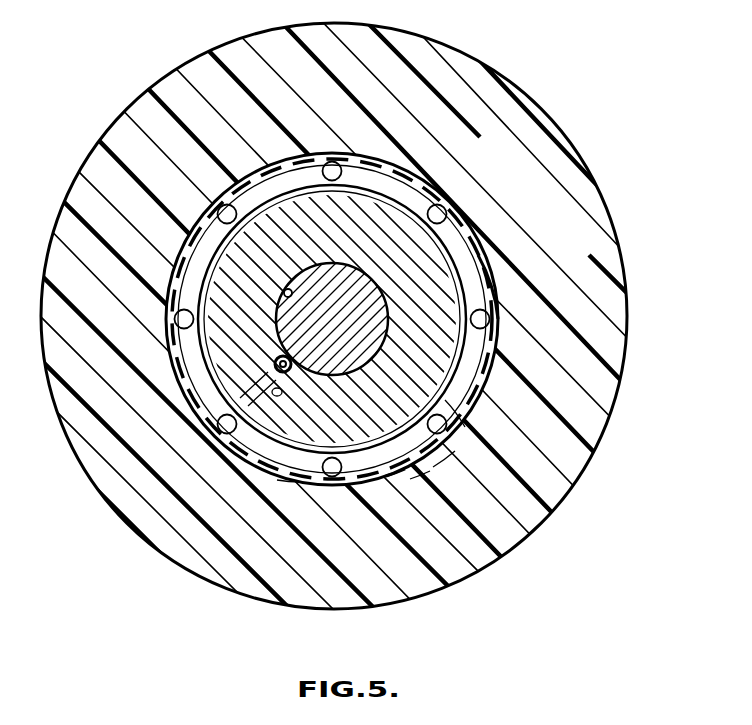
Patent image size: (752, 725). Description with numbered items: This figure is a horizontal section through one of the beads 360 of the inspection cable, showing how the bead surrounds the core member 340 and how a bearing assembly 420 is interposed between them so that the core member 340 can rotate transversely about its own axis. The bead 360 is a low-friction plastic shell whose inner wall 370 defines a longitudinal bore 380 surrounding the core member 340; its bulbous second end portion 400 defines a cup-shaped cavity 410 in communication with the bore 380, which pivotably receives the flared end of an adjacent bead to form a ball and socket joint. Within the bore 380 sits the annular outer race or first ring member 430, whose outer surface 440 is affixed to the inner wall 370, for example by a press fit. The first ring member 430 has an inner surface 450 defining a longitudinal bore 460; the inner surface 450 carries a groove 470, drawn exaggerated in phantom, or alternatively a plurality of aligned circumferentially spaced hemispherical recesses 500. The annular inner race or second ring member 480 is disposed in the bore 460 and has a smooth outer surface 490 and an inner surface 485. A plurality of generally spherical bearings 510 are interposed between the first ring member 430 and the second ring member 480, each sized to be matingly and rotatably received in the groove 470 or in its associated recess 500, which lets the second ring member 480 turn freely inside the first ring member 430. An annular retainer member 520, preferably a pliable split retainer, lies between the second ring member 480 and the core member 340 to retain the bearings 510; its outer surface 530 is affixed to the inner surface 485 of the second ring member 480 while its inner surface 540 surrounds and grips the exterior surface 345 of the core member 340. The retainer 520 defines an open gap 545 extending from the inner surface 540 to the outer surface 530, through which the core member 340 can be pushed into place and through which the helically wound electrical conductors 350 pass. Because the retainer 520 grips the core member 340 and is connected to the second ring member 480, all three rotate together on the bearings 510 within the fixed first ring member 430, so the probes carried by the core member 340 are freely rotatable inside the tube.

The core member 340 is at (325, 275).
The exterior surface 345 is at (367, 258).
The electrical conductors 350 is at (275, 372).
The bead 360 is at (519, 90).
The inner wall 370 is at (422, 184).
The longitudinal bore 380 is at (456, 211).
The second end portion 400 is at (625, 290).
The cavity 410 is at (493, 331).
The bearing assembly 420 is at (570, 256).
The first ring member 430 is at (490, 367).
The outer surface 440 is at (498, 305).
The inner surface 450 is at (459, 382).
The longitudinal bore 460 is at (466, 418).
The groove 470 is at (410, 479).
The second ring member 480 is at (445, 421).
The inner surface 485 is at (433, 466).
The outer surface 490 is at (386, 476).
The hemispherical recesses 500 is at (335, 479).
The bearings 510 is at (277, 480).
The retainer member 520 is at (277, 462).
The outer surface 530 is at (187, 357).
The inner surface 540 is at (284, 293).
The open gap 545 is at (280, 388).